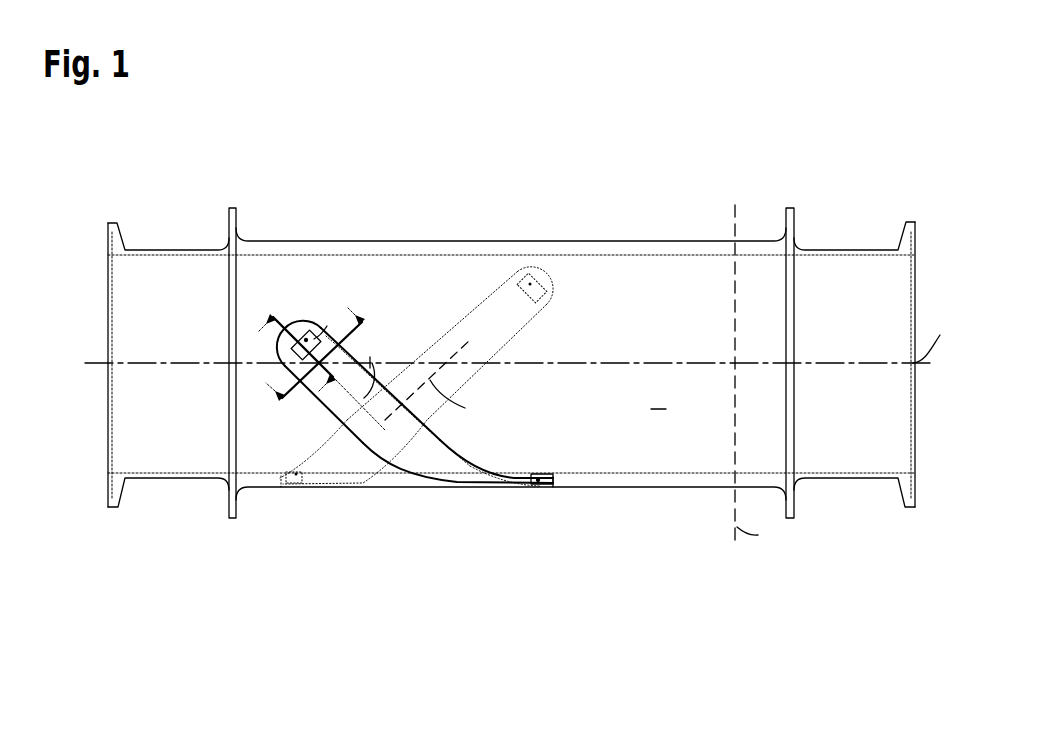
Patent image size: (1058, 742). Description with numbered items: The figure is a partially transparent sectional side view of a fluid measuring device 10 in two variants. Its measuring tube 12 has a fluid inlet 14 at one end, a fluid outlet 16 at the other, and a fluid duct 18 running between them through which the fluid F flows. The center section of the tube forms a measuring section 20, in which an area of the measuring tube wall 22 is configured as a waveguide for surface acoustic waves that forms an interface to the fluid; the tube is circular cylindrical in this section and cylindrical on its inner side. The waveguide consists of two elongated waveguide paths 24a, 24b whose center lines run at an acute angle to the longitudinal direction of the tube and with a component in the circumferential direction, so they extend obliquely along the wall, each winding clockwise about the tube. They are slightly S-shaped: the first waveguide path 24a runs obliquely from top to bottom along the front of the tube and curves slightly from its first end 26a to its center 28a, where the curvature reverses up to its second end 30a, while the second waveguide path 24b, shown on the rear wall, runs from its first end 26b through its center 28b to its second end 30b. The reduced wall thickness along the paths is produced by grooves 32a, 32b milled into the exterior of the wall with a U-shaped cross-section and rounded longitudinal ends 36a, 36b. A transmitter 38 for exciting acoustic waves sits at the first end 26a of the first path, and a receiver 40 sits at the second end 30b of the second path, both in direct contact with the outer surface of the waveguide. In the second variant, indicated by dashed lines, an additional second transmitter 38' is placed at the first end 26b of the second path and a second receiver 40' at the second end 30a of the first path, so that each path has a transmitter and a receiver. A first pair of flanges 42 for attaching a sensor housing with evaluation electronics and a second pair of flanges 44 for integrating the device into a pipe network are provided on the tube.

The fluid measuring device 10 is at (753, 150).
The measuring tube 12 is at (680, 241).
The fluid inlet 14 is at (103, 313).
The fluid outlet 16 is at (915, 395).
The fluid duct 18 is at (604, 409).
The measuring section 20 is at (514, 256).
The measuring tube wall 22 is at (253, 482).
The first waveguide path 24a is at (443, 463).
The second waveguide path 24b is at (460, 322).
The first end of first waveguide path 26a is at (302, 325).
The first end of second waveguide path 26b is at (343, 468).
The center of first waveguide path 28a is at (398, 437).
The center of second waveguide path 28b is at (413, 370).
The second end of first waveguide path 30a is at (543, 487).
The second end of second waveguide path 30b is at (543, 280).
The first groove 32a is at (485, 480).
The second groove 32b is at (350, 484).
The rounded longitudinal end of first groove 36a is at (297, 325).
The rounded longitudinal end of second groove 36b is at (548, 287).
The transmitter 38 is at (320, 271).
The second transmitter 38' is at (279, 450).
The receiver 40 is at (539, 240).
The second receiver 40' is at (544, 454).
The first pair of flanges 42 is at (229, 208).
The second pair of flanges 44 is at (108, 222).